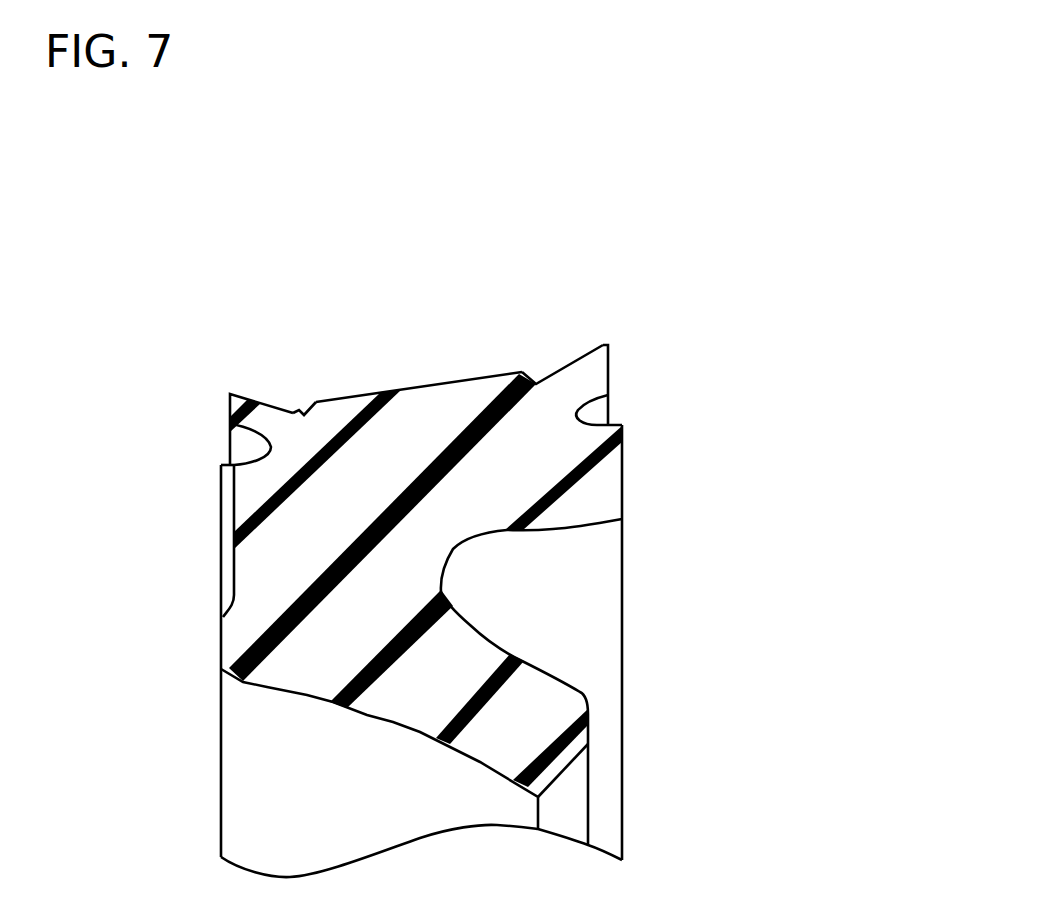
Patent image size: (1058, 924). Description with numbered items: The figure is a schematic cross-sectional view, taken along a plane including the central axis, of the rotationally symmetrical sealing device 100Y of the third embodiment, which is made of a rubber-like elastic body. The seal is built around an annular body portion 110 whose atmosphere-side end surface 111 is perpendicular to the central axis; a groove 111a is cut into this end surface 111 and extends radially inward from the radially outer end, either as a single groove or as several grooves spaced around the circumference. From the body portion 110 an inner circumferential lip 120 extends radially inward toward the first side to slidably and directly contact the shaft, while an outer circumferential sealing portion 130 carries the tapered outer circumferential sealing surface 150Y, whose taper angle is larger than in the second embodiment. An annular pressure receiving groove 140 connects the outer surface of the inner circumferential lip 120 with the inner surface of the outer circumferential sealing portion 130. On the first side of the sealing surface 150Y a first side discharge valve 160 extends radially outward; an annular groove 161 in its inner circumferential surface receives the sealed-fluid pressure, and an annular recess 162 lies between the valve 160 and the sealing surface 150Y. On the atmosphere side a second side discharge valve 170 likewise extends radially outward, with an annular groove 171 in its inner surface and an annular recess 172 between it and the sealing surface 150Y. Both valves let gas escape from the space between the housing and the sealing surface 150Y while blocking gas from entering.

The sealing device 100Y is at (802, 329).
The body portion 110 is at (268, 618).
The end surface 111 is at (219, 575).
The groove 111a is at (223, 517).
The inner circumferential lip 120 is at (528, 727).
The outer circumferential sealing portion 130 is at (603, 485).
The pressure receiving groove 140 is at (442, 590).
The outer circumferential sealing surface 150Y is at (427, 381).
The first side discharge valve 160 is at (626, 347).
The annular groove 161 is at (598, 404).
The annular recess 162 is at (539, 380).
The second side discharge valve 170 is at (230, 351).
The annular groove 171 is at (240, 447).
The annular recess 172 is at (300, 408).